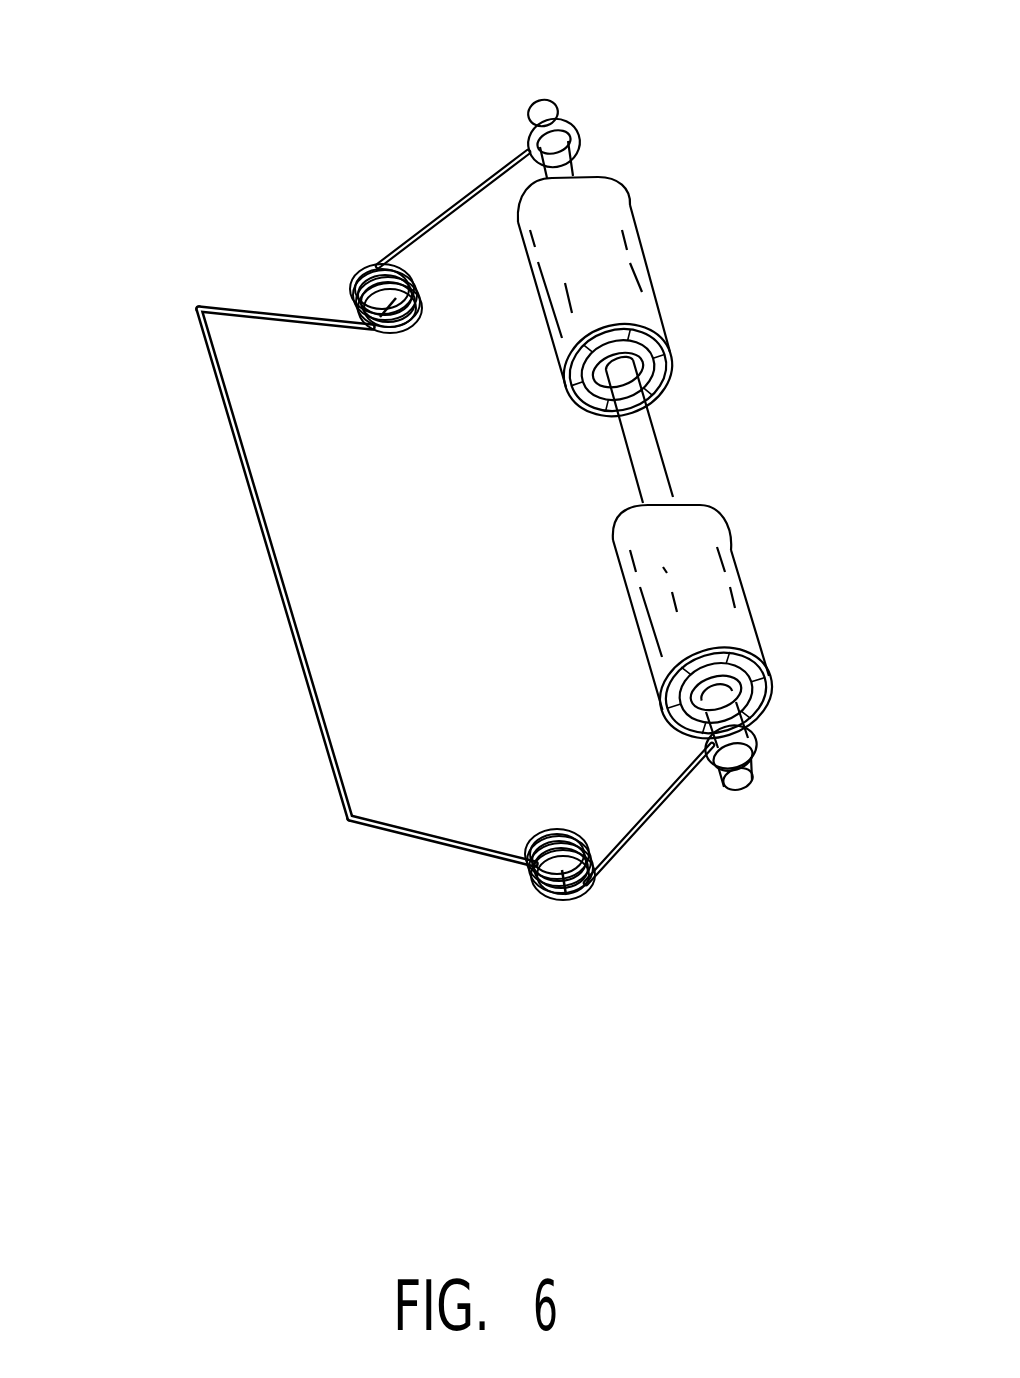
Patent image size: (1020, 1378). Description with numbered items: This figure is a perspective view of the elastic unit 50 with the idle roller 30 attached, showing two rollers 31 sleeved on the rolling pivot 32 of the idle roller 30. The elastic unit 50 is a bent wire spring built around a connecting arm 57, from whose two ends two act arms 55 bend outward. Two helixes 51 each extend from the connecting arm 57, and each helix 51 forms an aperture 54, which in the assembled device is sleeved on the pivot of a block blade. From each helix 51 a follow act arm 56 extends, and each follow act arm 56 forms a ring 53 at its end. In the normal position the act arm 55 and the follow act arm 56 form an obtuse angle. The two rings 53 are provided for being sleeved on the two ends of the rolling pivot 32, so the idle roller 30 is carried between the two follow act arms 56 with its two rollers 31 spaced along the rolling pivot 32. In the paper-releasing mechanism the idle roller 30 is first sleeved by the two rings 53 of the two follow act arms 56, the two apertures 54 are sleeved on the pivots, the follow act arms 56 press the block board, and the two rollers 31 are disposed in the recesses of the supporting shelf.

The idle roller 30 is at (552, 98).
The roller 31 is at (598, 225).
The rolling pivot 32 is at (640, 422).
The ring 53 is at (524, 100).
The elastic unit 50 is at (195, 307).
The helix 51 is at (422, 283).
The aperture 54 is at (376, 332).
The act arm 55 is at (268, 308).
The follow act arm 56 is at (458, 197).
The connecting arm 57 is at (260, 530).